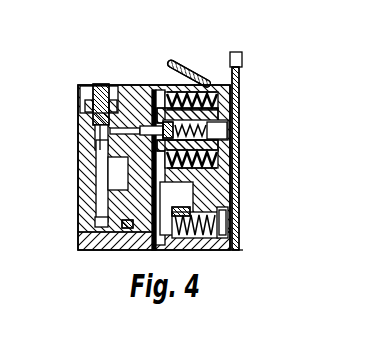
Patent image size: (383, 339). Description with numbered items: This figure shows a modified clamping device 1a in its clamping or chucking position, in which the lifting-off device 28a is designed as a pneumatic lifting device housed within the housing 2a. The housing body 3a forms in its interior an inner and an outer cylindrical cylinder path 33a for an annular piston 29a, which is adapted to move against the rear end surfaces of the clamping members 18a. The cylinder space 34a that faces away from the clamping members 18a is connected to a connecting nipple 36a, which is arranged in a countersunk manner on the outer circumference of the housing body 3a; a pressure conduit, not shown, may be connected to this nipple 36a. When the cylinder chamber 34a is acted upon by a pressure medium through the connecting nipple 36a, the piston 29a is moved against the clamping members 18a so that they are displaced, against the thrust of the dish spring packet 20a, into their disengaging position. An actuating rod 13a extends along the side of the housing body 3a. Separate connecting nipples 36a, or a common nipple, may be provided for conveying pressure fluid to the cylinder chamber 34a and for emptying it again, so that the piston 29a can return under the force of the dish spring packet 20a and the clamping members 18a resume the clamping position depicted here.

The valve assembly 1a is at (142, 56).
The housing 2a is at (223, 194).
The housing body 3a is at (83, 210).
The actuating rod 13a is at (248, 72).
The clamping members 18a is at (238, 104).
The dish spring packet 20a is at (215, 163).
The lifting-off device 28a is at (92, 125).
The annular piston 29a is at (130, 175).
The cylinder path 33a is at (95, 135).
The cylinder space 34a is at (102, 162).
The connecting nipple 36a is at (98, 45).